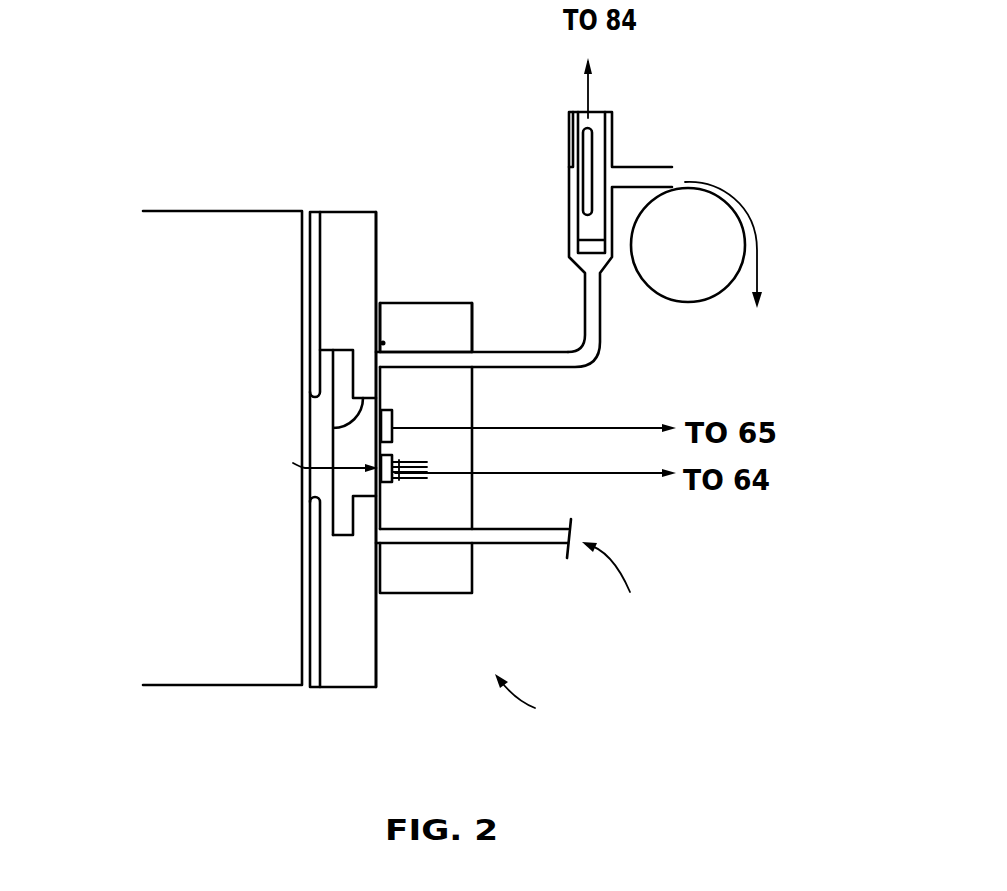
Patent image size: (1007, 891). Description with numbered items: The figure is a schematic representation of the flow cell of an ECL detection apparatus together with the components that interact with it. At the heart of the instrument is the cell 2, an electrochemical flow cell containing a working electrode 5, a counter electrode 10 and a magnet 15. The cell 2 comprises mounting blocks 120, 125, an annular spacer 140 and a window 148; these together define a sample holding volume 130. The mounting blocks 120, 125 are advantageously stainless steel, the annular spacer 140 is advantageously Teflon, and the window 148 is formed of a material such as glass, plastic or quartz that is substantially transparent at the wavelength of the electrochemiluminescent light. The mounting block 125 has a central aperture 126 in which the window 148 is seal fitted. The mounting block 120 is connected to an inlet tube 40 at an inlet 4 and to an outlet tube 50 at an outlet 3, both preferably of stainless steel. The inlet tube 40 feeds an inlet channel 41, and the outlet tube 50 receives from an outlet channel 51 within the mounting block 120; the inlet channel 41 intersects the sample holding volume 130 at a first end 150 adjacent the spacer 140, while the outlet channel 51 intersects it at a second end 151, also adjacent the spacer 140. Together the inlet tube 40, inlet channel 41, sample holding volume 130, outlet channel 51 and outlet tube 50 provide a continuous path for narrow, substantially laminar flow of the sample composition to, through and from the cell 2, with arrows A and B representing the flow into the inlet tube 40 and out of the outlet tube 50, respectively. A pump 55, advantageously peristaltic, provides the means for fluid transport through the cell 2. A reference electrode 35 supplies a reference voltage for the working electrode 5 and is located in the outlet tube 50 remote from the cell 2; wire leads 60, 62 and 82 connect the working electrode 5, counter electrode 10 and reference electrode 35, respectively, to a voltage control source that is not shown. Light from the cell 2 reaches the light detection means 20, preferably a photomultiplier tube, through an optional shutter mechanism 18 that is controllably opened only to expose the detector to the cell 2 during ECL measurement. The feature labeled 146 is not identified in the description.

The cell 2 is at (530, 697).
The outlet 3 is at (477, 352).
The inlet 4 is at (473, 547).
The working electrode 5 is at (398, 456).
The counter electrode 10 is at (394, 420).
The magnet 15 is at (407, 484).
The shutter mechanism 18 is at (322, 212).
The light detection means 20 is at (225, 687).
The reference electrode 35 is at (593, 157).
The inlet tube 40 is at (548, 547).
The inlet channel 41 is at (408, 543).
The outlet tube 50 is at (598, 343).
The outlet channel 51 is at (437, 355).
The pump 55 is at (688, 303).
The wire lead 60 is at (598, 427).
The wire lead 62 is at (538, 473).
The wire lead 82 is at (589, 94).
The mounting block 120 is at (455, 596).
The mounting block 125 is at (376, 662).
The central aperture 126 is at (372, 496).
The sample holding volume 130 is at (312, 465).
The annular spacer 140 is at (403, 303).
The curved guide 146 is at (333, 427).
The window 148 is at (332, 408).
The first end 150 is at (373, 535).
The second end 151 is at (383, 343).
The arrow A is at (617, 598).
The arrow B is at (729, 268).